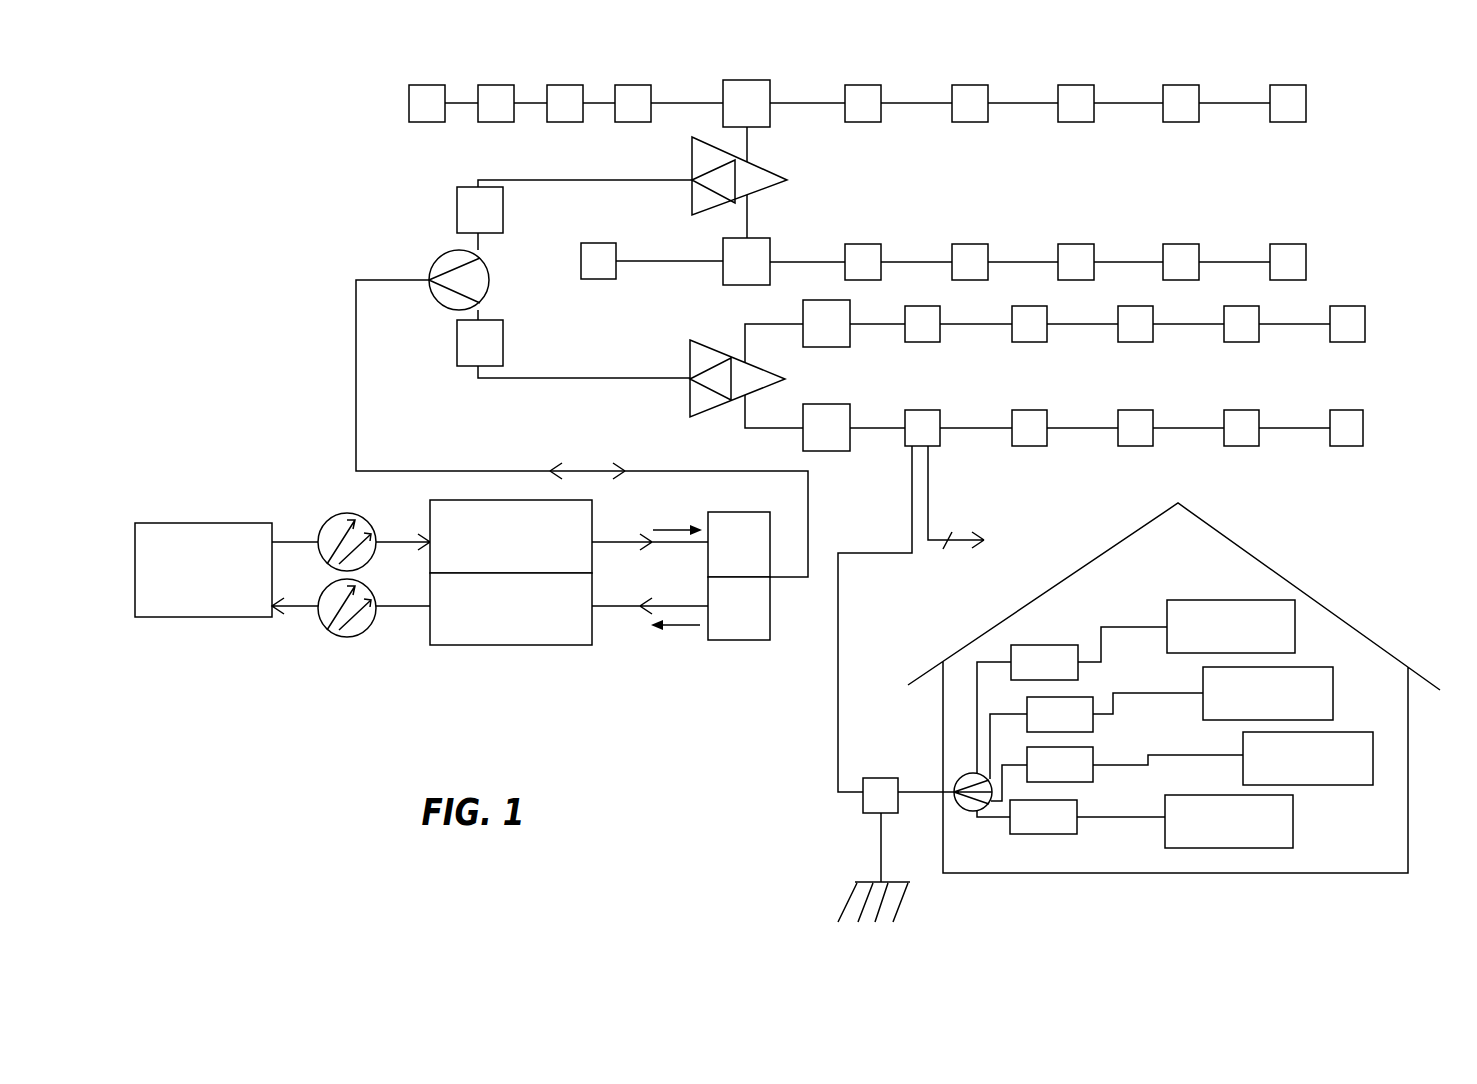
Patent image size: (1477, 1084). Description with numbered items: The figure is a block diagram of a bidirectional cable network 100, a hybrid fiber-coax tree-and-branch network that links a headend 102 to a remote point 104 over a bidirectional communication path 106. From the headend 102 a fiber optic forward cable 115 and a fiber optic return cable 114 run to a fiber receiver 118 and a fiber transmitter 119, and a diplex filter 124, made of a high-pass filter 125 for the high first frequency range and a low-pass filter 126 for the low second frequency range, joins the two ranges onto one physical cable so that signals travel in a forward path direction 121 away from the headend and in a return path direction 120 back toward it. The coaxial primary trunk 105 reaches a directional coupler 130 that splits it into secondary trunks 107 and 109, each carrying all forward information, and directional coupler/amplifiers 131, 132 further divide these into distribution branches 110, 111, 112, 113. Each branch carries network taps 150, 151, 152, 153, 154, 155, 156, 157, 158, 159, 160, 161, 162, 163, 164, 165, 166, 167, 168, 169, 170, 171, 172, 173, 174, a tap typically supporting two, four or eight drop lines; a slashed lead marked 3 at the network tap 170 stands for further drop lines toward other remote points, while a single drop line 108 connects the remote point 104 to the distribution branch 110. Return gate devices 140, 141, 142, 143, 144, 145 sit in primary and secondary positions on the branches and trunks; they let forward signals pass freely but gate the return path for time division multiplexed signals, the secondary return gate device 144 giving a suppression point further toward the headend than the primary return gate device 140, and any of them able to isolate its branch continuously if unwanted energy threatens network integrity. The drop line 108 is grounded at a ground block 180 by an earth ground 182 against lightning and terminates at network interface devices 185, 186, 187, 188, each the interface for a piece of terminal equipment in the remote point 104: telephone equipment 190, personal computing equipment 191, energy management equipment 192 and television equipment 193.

The bidirectional cable network 100 is at (290, 212).
The headend 102 is at (210, 618).
The remote point 104 is at (1140, 874).
The primary trunk 105 is at (355, 343).
The bidirectional communication path 106 is at (583, 452).
The secondary trunk 107 is at (565, 376).
The drop line 108 is at (886, 555).
The secondary trunk 109 is at (600, 178).
The distribution branch 110 is at (742, 418).
The distribution branch 111 is at (744, 328).
The distribution branch 112 is at (750, 215).
The distribution branch 113 is at (752, 143).
The fiber optic return cable 114 is at (367, 638).
The fiber optic forward cable 115 is at (330, 516).
The fiber receiver 118 is at (594, 514).
The fiber transmitter 119 is at (555, 646).
The return path direction 120 is at (683, 630).
The forward path direction 121 is at (668, 525).
The diplex filter 124 is at (783, 593).
The high-pass filter 125 is at (772, 530).
The low-pass filter 126 is at (750, 641).
The directional coupler 130 is at (433, 298).
The directional coupler/amplifier 131 is at (690, 202).
The directional coupler/amplifier 132 is at (688, 398).
The return gate device 140 is at (840, 452).
The return gate device 141 is at (840, 348).
The return gate device 142 is at (722, 285).
The return gate device 143 is at (748, 80).
The return gate device 144 is at (462, 367).
The return gate device 145 is at (457, 206).
The network tap 150 is at (420, 85).
The network tap 151 is at (492, 85).
The network tap 152 is at (563, 84).
The network tap 153 is at (639, 84).
The network tap 154 is at (863, 85).
The network tap 155 is at (968, 85).
The network tap 156 is at (1075, 85).
The network tap 157 is at (1183, 85).
The network tap 158 is at (1292, 85).
The network tap 159 is at (598, 243).
The network tap 160 is at (863, 244).
The network tap 161 is at (968, 244).
The network tap 162 is at (1074, 244).
The network tap 163 is at (1184, 244).
The network tap 164 is at (1294, 244).
The network tap 165 is at (925, 343).
The network tap 166 is at (1030, 343).
The network tap 167 is at (1134, 343).
The network tap 168 is at (1242, 343).
The network tap 169 is at (1350, 343).
The network tap 170 is at (933, 447).
The network tap 171 is at (1040, 447).
The network tap 172 is at (1134, 447).
The network tap 173 is at (1238, 447).
The network tap 174 is at (1350, 447).
The ground block 180 is at (862, 809).
The earth ground 182 is at (910, 884).
The network interface device 185 is at (1079, 834).
The network interface device 186 is at (1095, 751).
The network interface device 187 is at (1080, 697).
The network interface device 188 is at (1066, 645).
The telephone equipment 190 is at (1203, 599).
The personal computing equipment 191 is at (1334, 684).
The energy management equipment 192 is at (1374, 754).
The television equipment 193 is at (1295, 825).
The lines to remote points 3 is at (994, 511).